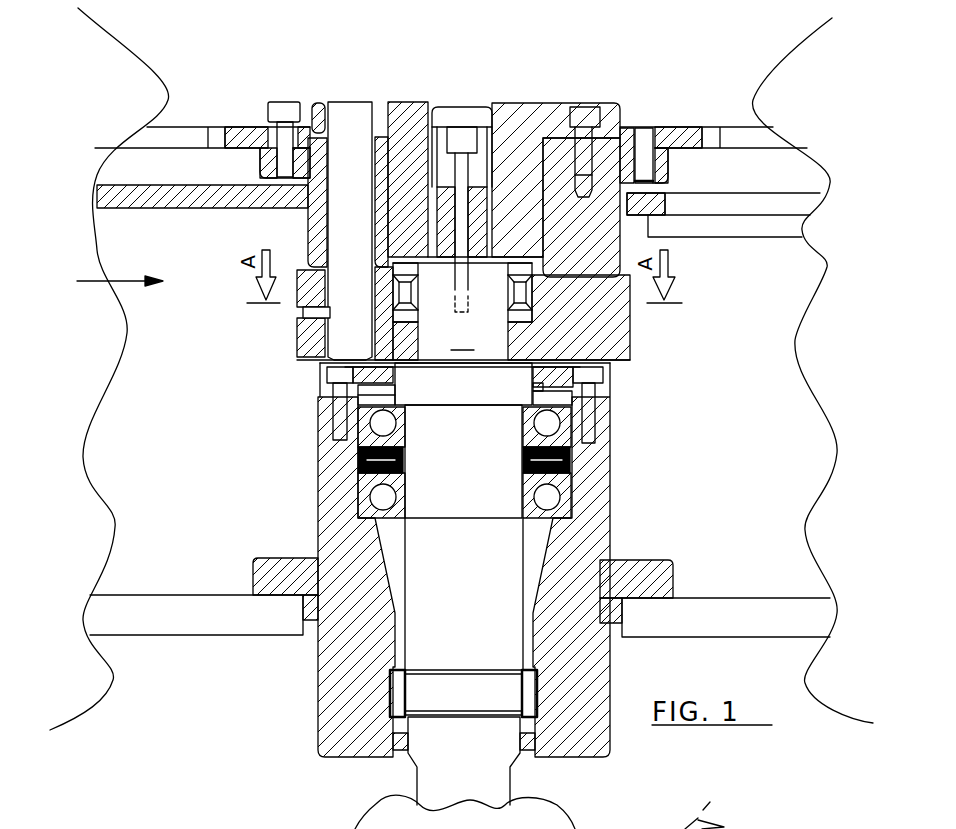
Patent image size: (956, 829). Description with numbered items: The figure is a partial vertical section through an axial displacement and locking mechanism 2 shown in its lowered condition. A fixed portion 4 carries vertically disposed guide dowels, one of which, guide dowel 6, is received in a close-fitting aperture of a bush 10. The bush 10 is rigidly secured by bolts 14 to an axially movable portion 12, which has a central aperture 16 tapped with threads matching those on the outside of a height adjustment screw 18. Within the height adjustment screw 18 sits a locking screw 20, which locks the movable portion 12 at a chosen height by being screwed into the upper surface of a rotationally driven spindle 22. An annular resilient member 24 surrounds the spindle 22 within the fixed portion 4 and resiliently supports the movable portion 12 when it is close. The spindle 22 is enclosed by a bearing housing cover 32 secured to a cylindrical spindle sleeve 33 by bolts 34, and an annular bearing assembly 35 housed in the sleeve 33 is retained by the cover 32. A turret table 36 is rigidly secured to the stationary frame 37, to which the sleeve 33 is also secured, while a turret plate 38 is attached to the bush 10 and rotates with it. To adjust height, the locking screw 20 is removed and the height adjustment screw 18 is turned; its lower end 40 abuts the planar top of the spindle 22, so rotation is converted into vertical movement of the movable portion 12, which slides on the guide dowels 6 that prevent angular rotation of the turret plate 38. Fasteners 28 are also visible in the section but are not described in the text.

The axial displacement and locking mechanism 2 is at (109, 281).
The fixed portion 4 is at (317, 340).
The guide dowel 6 is at (348, 233).
The bush 10 is at (317, 157).
The axially movable portion 12 is at (533, 147).
The bolts 14 is at (580, 137).
The central aperture 16 is at (490, 104).
The height adjustment screw 18 is at (438, 103).
The locking screw 20 is at (462, 115).
The rotationally driven spindle 22 is at (427, 553).
The annular resilient member 24 is at (535, 387).
The cap screw 28 is at (327, 398).
The bearing housing cover 32 is at (607, 420).
The cylindrical spindle sleeve 33 is at (330, 448).
The bolts 34 is at (607, 378).
The annular bearing assembly 35 is at (382, 460).
The turret table 36 is at (147, 186).
The stationary frame 37 is at (180, 620).
The turret plate 38 is at (268, 108).
The lower end of the height adjustment screw 40 is at (485, 262).